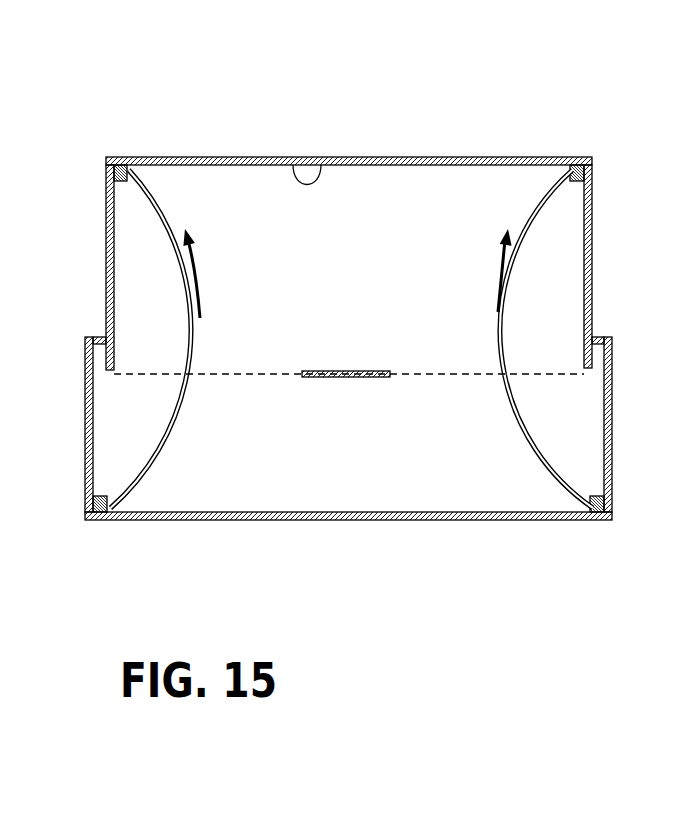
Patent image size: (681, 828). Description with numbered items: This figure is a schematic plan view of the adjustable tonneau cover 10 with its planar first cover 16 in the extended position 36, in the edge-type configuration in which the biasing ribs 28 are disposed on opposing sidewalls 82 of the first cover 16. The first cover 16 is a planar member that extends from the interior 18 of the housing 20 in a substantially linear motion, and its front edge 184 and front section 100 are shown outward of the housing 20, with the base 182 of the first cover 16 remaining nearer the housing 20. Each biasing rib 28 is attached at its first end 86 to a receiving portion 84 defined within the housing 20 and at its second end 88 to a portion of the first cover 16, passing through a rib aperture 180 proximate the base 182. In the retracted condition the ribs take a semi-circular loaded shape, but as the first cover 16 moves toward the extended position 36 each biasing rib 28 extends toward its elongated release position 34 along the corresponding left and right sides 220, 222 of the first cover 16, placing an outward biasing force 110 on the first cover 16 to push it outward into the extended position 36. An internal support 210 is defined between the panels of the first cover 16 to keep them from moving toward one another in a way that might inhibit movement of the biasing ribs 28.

The adjustable tonneau cover 10 is at (242, 112).
The first cover 16 is at (471, 135).
The interior 18 is at (463, 495).
The housing 20 is at (610, 478).
The biasing rib 28 is at (182, 412).
The release position 34 is at (518, 203).
The extended position 36 is at (220, 152).
The planar sidewalls 82 is at (114, 170).
The receiving portion 84 is at (85, 514).
The first end 86 is at (148, 480).
The second end 88 is at (148, 157).
The front section 100 is at (316, 157).
The outward biasing force 110 is at (203, 272).
The rib aperture 180 is at (516, 380).
The base 182 is at (155, 378).
The front edge 184 is at (353, 157).
The internal supports 210 is at (347, 378).
The left side 220 is at (100, 208).
The right side 222 is at (598, 248).